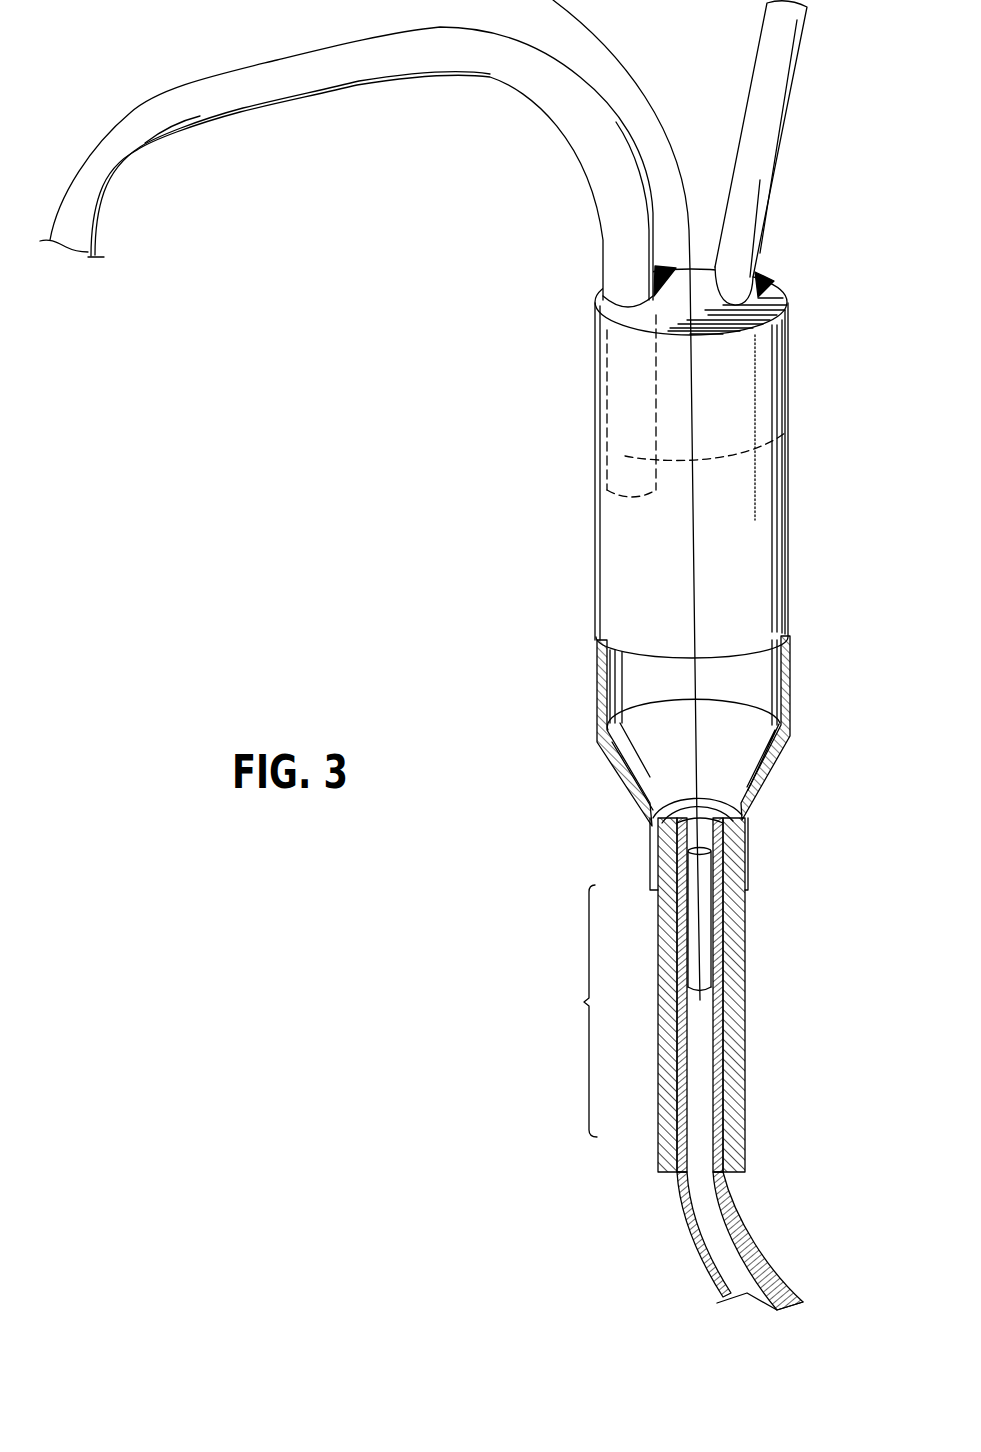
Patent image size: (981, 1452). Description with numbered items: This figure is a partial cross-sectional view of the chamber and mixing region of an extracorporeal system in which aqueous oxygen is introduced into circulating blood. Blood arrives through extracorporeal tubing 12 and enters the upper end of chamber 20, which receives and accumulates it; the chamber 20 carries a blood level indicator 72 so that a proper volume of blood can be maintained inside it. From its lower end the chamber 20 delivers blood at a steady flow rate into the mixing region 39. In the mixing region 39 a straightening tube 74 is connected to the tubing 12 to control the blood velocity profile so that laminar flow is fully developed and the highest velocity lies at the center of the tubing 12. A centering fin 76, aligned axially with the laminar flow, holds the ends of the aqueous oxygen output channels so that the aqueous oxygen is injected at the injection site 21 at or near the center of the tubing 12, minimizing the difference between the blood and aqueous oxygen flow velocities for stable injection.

The extracorporeal tubing 12 is at (273, 98).
The chamber 20 is at (788, 358).
The blood level indicator 72 is at (646, 458).
The centering fin 76 is at (690, 876).
The straightening tube 74 is at (745, 924).
The injection site 21 is at (700, 1000).
The mixing region 39 is at (583, 1002).